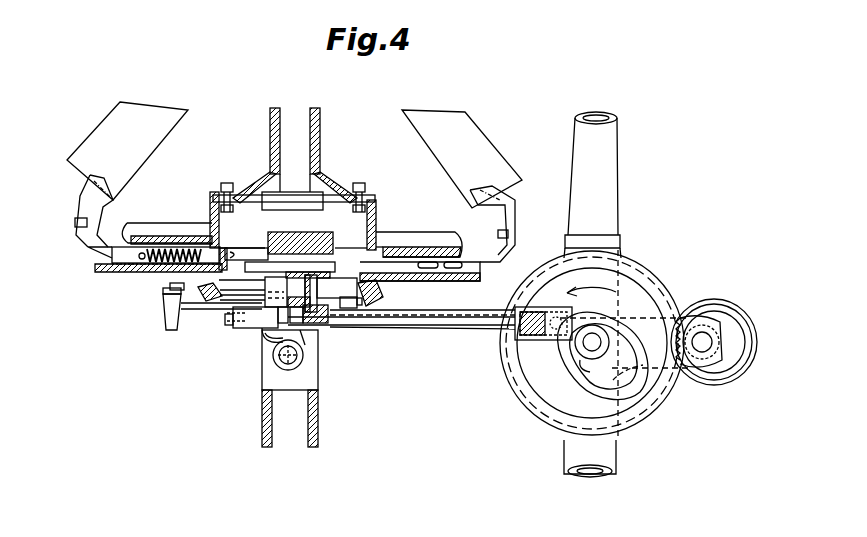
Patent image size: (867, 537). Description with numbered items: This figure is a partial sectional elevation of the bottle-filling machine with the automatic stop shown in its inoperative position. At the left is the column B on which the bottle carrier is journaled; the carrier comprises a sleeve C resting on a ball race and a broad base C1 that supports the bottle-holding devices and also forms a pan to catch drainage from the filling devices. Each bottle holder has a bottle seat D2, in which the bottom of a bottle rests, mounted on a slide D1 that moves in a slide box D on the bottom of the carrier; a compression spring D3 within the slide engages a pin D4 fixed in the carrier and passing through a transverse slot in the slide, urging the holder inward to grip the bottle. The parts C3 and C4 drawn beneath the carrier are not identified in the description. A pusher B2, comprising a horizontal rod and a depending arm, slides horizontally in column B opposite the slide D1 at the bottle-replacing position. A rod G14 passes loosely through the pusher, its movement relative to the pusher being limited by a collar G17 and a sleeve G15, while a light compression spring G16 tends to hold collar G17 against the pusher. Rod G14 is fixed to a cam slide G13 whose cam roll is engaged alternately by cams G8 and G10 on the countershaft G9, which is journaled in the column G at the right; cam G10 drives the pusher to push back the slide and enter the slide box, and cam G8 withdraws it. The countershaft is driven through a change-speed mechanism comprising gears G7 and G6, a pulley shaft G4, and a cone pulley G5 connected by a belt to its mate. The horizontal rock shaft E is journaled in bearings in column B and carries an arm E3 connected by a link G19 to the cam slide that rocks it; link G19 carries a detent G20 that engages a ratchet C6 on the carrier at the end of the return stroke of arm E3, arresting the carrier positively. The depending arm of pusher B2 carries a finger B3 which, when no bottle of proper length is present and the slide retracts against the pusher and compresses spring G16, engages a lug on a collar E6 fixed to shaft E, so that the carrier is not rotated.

The column B is at (318, 427).
The sleeve C is at (320, 144).
The pusher B2 is at (240, 258).
The broad base C1 is at (405, 240).
The slide box D is at (265, 264).
The slide D1 is at (107, 253).
The bottle seat D2 is at (90, 185).
The compression spring D3 is at (182, 278).
The pin D4 is at (130, 268).
The valve C3 is at (165, 293).
The valve stem C4 is at (165, 318).
The ratchet C6 is at (222, 290).
The detent G20 is at (328, 290).
The collar G17 is at (256, 318).
The rod G14 is at (410, 318).
The link G19 is at (430, 330).
The compression spring G16 is at (320, 325).
The sleeve G15 is at (332, 327).
The rock shaft E is at (290, 360).
The collar E6 is at (276, 363).
The arm E3 is at (313, 340).
The finger B3 is at (262, 338).
The column G is at (607, 205).
The gear G7 is at (638, 420).
The cam G10 is at (595, 340).
The cam G8 is at (548, 388).
The countershaft G9 is at (583, 357).
The cam slide G13 is at (520, 340).
The cone pulley G5 is at (715, 385).
The pulley shaft G4 is at (710, 348).
The gear G6 is at (718, 332).